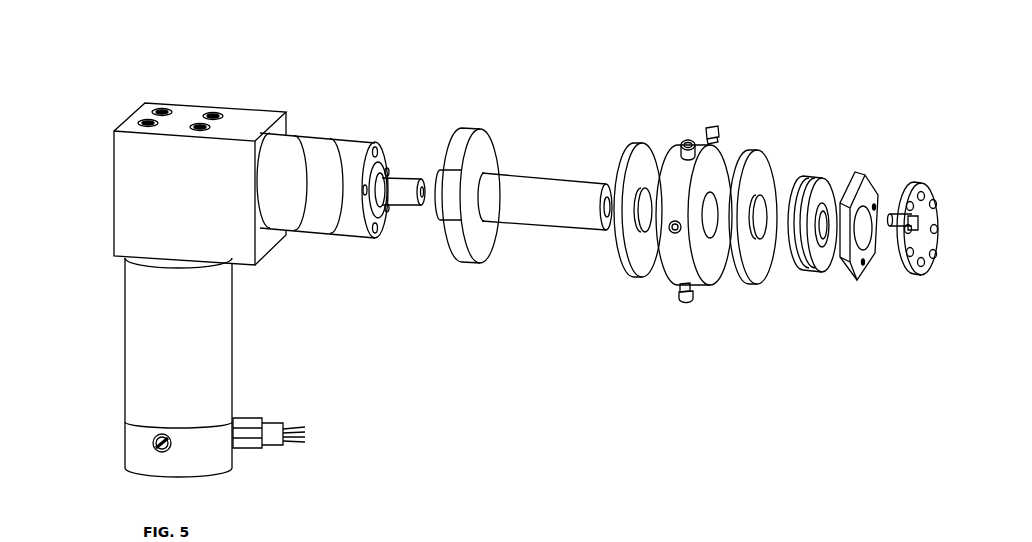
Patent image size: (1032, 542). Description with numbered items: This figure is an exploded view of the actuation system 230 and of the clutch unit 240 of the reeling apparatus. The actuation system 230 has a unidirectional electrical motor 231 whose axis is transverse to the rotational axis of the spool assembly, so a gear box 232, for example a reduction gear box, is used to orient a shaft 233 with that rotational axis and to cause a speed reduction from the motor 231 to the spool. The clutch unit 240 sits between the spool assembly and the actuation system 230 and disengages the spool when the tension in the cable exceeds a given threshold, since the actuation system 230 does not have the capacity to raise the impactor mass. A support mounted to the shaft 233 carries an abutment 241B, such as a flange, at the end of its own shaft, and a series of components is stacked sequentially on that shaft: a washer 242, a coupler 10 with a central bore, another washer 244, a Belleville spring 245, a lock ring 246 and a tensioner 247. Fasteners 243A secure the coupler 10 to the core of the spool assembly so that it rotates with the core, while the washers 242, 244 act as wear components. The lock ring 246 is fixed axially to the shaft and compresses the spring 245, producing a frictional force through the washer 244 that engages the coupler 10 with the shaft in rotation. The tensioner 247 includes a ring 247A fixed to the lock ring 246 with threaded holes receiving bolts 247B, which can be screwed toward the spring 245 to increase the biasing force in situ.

The valve body 10 is at (705, 257).
The actuation system 230 is at (305, 323).
The unidirectional electrical motor 231 is at (173, 360).
The gear box 232 is at (187, 193).
The shaft 233 is at (407, 177).
The clutch unit 240 is at (613, 300).
The abutment 241B is at (473, 123).
The washer 242 is at (644, 142).
The fasteners 243A is at (708, 122).
The washer 244 is at (758, 148).
The Belleville spring 245 is at (810, 178).
The lock ring 246 is at (858, 172).
The tensioner 247 is at (918, 280).
The ring 247A is at (913, 177).
The bolts 247B is at (925, 213).